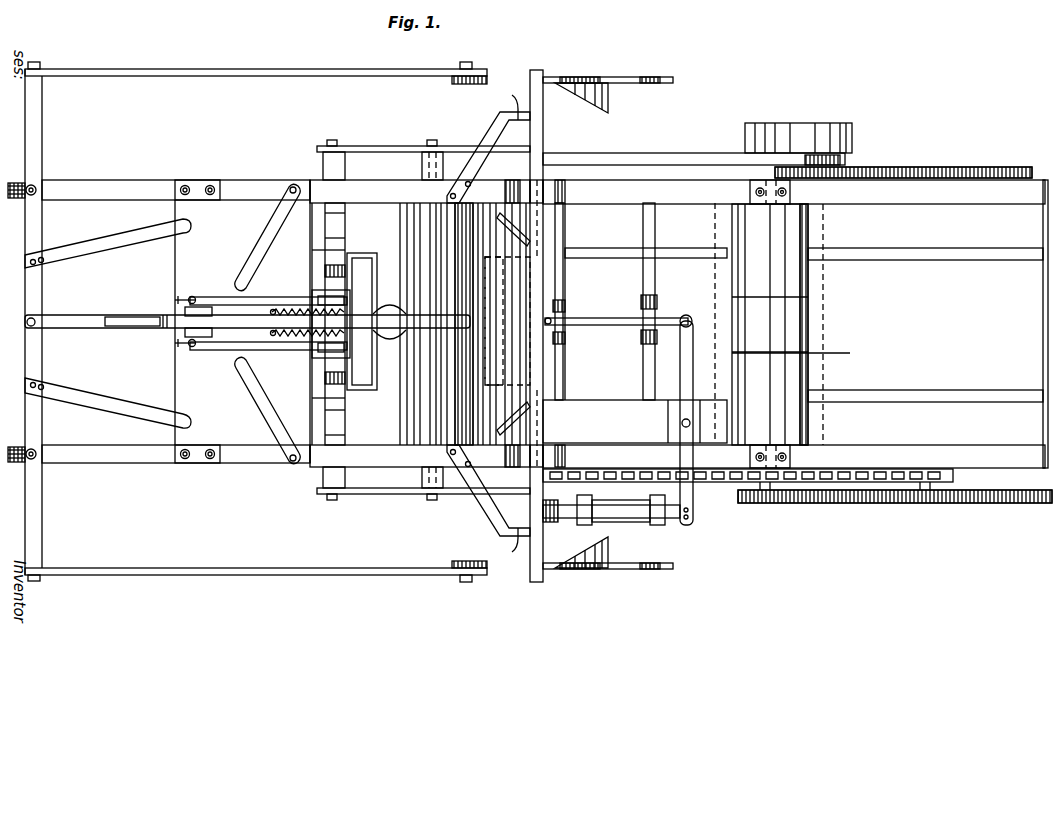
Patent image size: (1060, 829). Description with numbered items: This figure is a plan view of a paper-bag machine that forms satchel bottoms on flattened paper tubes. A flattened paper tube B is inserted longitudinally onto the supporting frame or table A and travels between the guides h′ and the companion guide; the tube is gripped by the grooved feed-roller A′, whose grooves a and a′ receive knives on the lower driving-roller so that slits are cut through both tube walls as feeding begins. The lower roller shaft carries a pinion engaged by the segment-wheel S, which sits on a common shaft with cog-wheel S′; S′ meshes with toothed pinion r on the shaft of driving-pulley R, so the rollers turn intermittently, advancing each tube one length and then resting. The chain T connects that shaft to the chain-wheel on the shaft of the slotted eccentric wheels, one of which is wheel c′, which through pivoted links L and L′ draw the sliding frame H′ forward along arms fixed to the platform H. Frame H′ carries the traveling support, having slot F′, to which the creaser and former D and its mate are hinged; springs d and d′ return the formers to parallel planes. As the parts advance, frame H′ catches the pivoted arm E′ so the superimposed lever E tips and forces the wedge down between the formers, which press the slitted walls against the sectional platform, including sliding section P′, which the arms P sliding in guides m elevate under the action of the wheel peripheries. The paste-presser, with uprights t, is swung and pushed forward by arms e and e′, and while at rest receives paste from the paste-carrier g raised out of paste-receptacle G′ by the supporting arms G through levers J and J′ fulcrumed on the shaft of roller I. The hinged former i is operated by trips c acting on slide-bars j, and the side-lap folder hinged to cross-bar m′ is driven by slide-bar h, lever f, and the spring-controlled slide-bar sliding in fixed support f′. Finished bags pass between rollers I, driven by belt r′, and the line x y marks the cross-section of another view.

The pivoted link L′ is at (252, 76).
The pivoted link L is at (225, 570).
The upper lever arm l′ is at (104, 240).
The lower lever arm l is at (108, 407).
The platform H is at (217, 399).
The sliding frame H′ is at (30, 352).
The slot F′ is at (247, 323).
The pivoted arm E′ is at (136, 324).
The superimposed lever E is at (210, 322).
The arm e′ is at (283, 297).
The arm e is at (279, 350).
The upright t is at (308, 322).
The supporting arm G is at (328, 324).
The paste-receptacle G′ is at (368, 250).
The paste-carrier g is at (352, 305).
The spring d is at (389, 346).
The spring d′ is at (389, 298).
The creaser and former D is at (393, 324).
The impinging roller I is at (470, 324).
The flattened paper tube B is at (479, 324).
The sliding platform section P′ is at (530, 270).
The hinged former i is at (513, 324).
The upper bent arm / rail k′ is at (905, 414).
The lower bent arm k is at (488, 490).
The slide-bar j is at (513, 323).
The lever J′ is at (423, 152).
The lever J is at (368, 494).
The eccentric wheel c′ is at (522, 50).
The arm P is at (538, 70).
The trip flange c is at (590, 98).
The upright guide m is at (545, 203).
The cross-bar m′ is at (563, 360).
The slide-bar h is at (600, 324).
The guide h′ is at (612, 407).
The centrally-fulcrumed lever f is at (682, 362).
The fixed support f′ is at (636, 518).
The section line x is at (727, 352).
The section line y is at (618, 512).
The supporting frame or table A is at (795, 324).
The grooved feed-roller A′ is at (770, 324).
The groove a is at (808, 297).
The groove a′ is at (777, 324).
The driving-pulley R is at (798, 138).
The belt r′ is at (670, 160).
The toothed pinion r is at (775, 167).
The cog-wheel S′ is at (968, 170).
The segment-wheel S is at (1005, 504).
The chain T is at (953, 477).